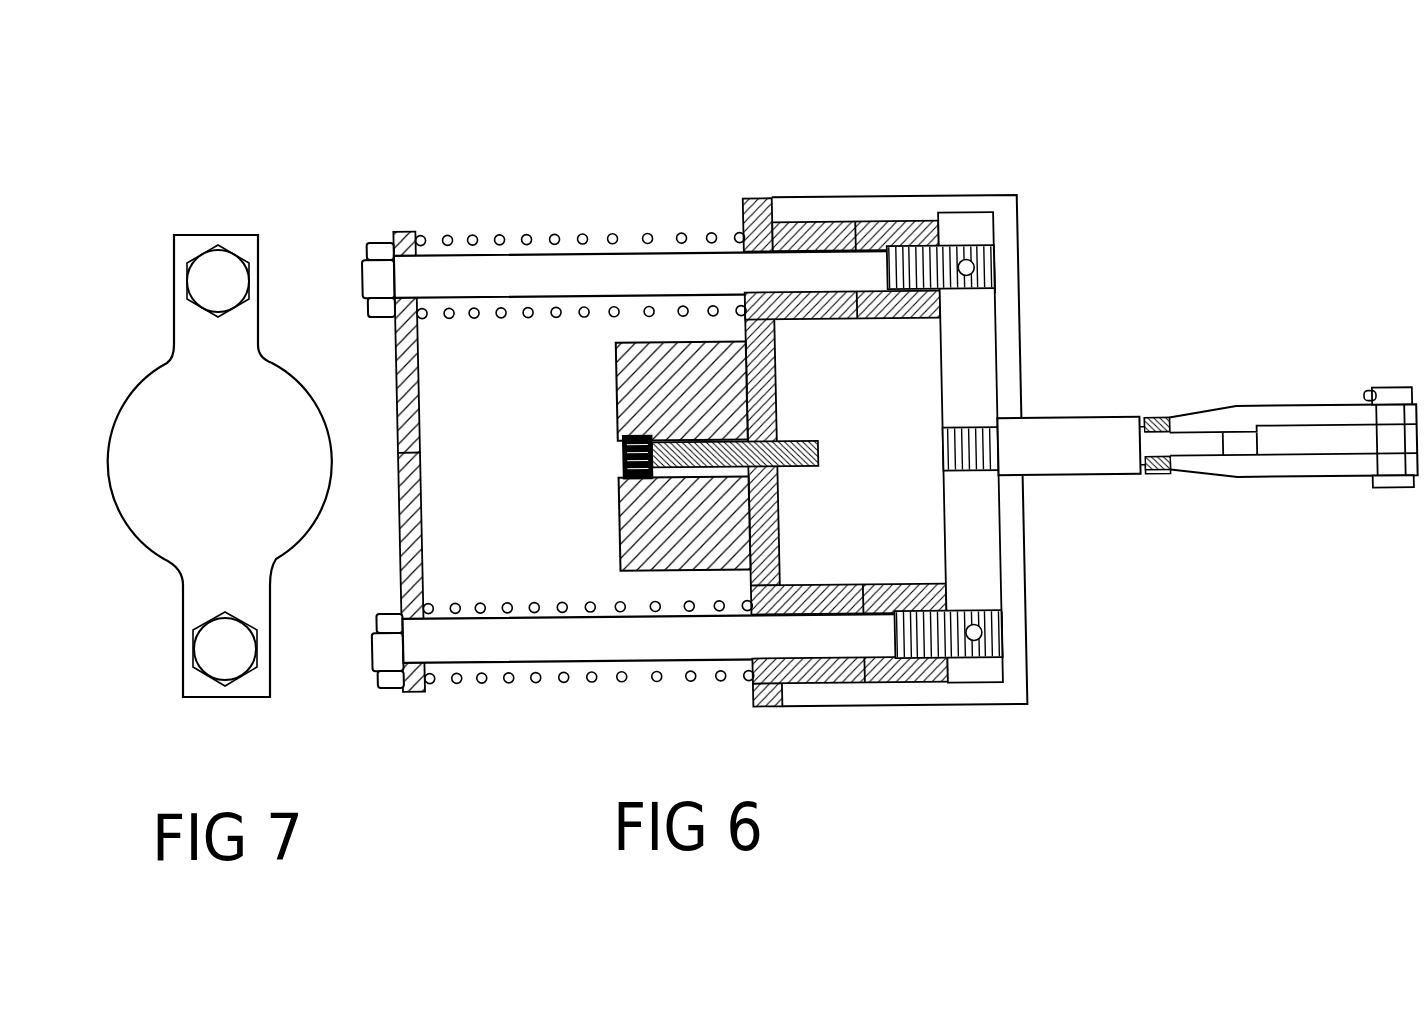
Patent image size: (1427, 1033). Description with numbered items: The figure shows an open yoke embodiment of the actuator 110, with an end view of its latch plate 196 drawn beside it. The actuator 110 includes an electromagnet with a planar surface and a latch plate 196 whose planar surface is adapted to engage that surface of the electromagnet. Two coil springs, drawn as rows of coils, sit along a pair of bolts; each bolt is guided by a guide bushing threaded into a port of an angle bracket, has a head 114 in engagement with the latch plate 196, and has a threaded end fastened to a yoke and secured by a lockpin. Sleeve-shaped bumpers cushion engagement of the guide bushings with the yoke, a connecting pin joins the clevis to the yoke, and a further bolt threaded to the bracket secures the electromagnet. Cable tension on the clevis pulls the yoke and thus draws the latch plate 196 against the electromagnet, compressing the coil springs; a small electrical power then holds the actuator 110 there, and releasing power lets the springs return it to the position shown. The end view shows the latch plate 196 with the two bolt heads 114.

In FIG. 6, the actuator 110 is at (847, 417).
In FIG. 7, the head 114 is at (216, 283).
In FIG. 7, the latch plate 196 is at (243, 476).